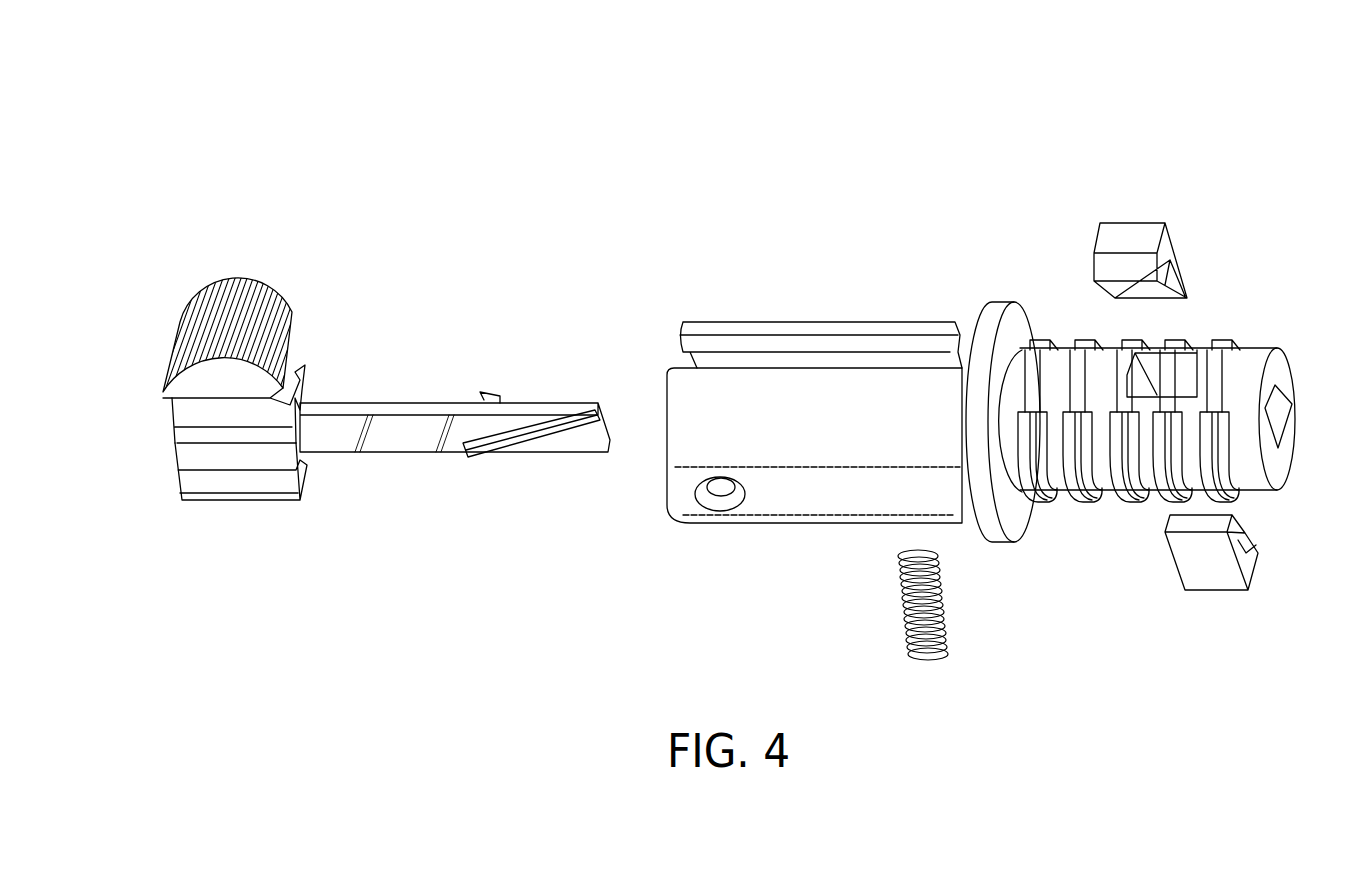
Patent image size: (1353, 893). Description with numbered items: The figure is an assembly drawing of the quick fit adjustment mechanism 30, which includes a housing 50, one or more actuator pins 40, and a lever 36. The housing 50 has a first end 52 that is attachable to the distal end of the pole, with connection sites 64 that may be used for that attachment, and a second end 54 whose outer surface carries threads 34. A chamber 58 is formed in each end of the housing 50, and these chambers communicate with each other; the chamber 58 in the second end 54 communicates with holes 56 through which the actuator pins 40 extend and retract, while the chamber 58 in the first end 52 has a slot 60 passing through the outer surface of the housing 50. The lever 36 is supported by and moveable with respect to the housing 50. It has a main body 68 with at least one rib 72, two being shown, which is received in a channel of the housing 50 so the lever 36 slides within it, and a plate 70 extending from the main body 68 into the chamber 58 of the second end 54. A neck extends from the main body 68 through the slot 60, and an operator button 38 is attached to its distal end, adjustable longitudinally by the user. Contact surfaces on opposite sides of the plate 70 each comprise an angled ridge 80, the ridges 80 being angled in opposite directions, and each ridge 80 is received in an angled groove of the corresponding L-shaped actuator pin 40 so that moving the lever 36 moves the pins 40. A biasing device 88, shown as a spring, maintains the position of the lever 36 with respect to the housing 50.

The quick fit adjustment mechanism 30 is at (307, 172).
The threads 34 is at (1093, 500).
The lever 36 is at (201, 507).
The operator button 38 is at (235, 272).
The actuator pins 40 is at (1130, 232).
The housing 50 is at (886, 100).
The first end 52 is at (705, 225).
The second end 54 is at (1243, 200).
The holes 56 is at (1187, 372).
The chamber 58 is at (1283, 420).
The slot 60 is at (858, 362).
The connection sites 64 is at (720, 495).
The main body 68 is at (192, 420).
The plate 70 is at (430, 442).
The rib 72 is at (178, 488).
The ridge 80 is at (527, 450).
The biasing device 88 is at (925, 665).